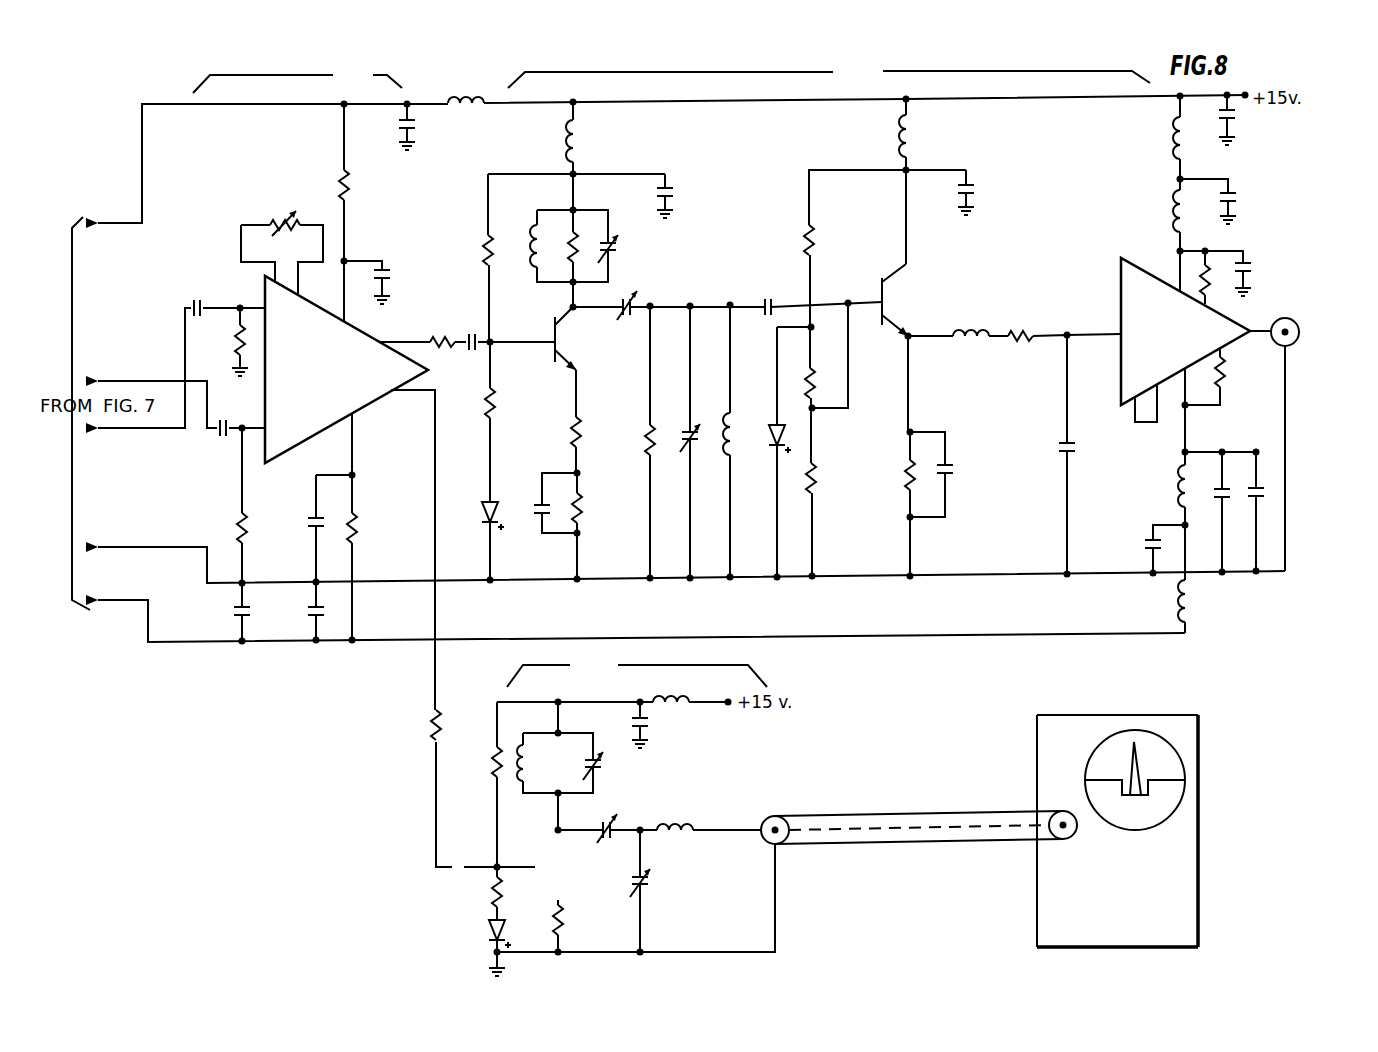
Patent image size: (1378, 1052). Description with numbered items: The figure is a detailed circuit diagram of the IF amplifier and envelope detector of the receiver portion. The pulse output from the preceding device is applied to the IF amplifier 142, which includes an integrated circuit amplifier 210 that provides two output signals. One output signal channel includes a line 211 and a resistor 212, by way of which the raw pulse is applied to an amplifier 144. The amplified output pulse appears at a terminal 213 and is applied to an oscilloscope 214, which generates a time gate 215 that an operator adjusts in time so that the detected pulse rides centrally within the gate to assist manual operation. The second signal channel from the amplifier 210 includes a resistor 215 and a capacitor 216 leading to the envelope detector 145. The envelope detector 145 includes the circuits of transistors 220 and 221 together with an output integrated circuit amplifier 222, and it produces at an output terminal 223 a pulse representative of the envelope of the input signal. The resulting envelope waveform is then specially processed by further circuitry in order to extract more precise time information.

The IF amplifier 142 is at (372, 84).
The amplifier 144 is at (613, 681).
The envelope detector 145 is at (873, 80).
The integrated circuit amplifier 210 is at (354, 403).
The line 211 is at (437, 608).
The resistor 212 is at (432, 722).
The terminal 213 is at (765, 819).
The oscilloscope 214 is at (1189, 752).
The resistor 215 is at (426, 338).
The capacitor 216 is at (467, 334).
The transistor 220 is at (560, 347).
The transistor 221 is at (884, 297).
The output integrated circuit amplifier 222 is at (1120, 308).
The output terminal 223 is at (1299, 332).